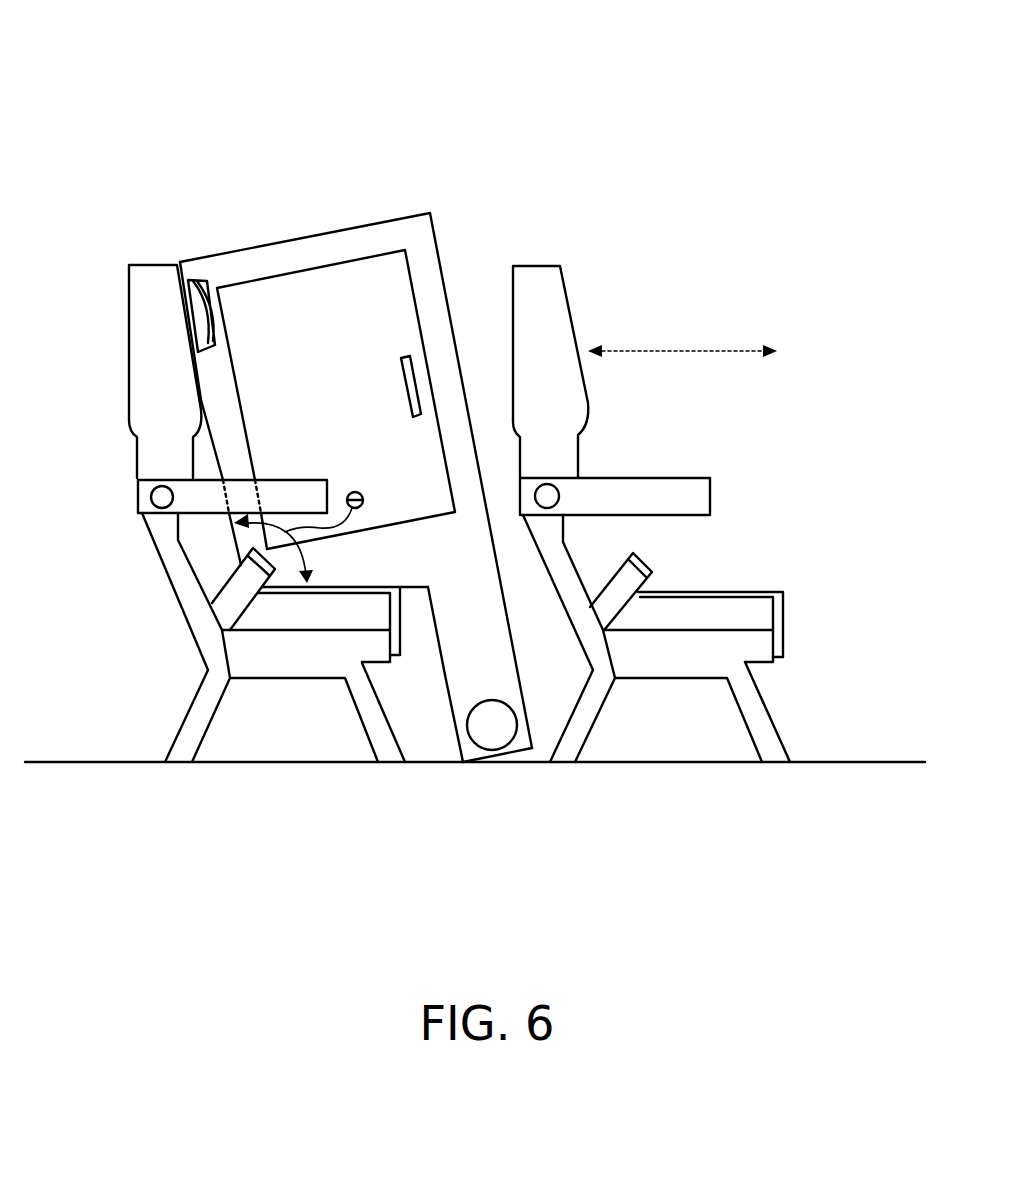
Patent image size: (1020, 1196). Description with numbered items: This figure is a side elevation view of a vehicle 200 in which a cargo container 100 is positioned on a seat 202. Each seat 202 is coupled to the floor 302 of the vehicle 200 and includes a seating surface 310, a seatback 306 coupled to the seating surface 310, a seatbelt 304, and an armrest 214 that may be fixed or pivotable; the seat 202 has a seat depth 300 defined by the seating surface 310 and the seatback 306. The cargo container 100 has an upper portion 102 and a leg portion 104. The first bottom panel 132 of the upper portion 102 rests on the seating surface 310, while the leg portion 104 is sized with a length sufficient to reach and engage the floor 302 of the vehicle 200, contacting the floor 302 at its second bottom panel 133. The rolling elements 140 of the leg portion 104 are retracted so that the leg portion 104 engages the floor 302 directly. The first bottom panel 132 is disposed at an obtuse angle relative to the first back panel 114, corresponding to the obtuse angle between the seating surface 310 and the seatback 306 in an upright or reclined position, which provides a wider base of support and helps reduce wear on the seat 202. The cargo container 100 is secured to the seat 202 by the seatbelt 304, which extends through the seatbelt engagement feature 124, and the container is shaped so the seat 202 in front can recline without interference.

The vehicle 200 is at (190, 108).
The cargo container 100 is at (288, 488).
The upper portion 102 is at (270, 236).
The leg portion 104 is at (447, 740).
The first back panel 114 is at (215, 439).
The seatbelt engagement feature 124 is at (270, 574).
The first bottom panel 132 is at (426, 587).
The second bottom panel 133 is at (530, 759).
The rolling elements 140 is at (475, 760).
The seat 202 is at (396, 473).
The armrest 214 is at (141, 494).
The seat depth 300 is at (733, 343).
The floor 302 is at (888, 760).
The seatbelt 304 is at (212, 600).
The seatback 306 is at (128, 297).
The seating surface 310 is at (338, 592).